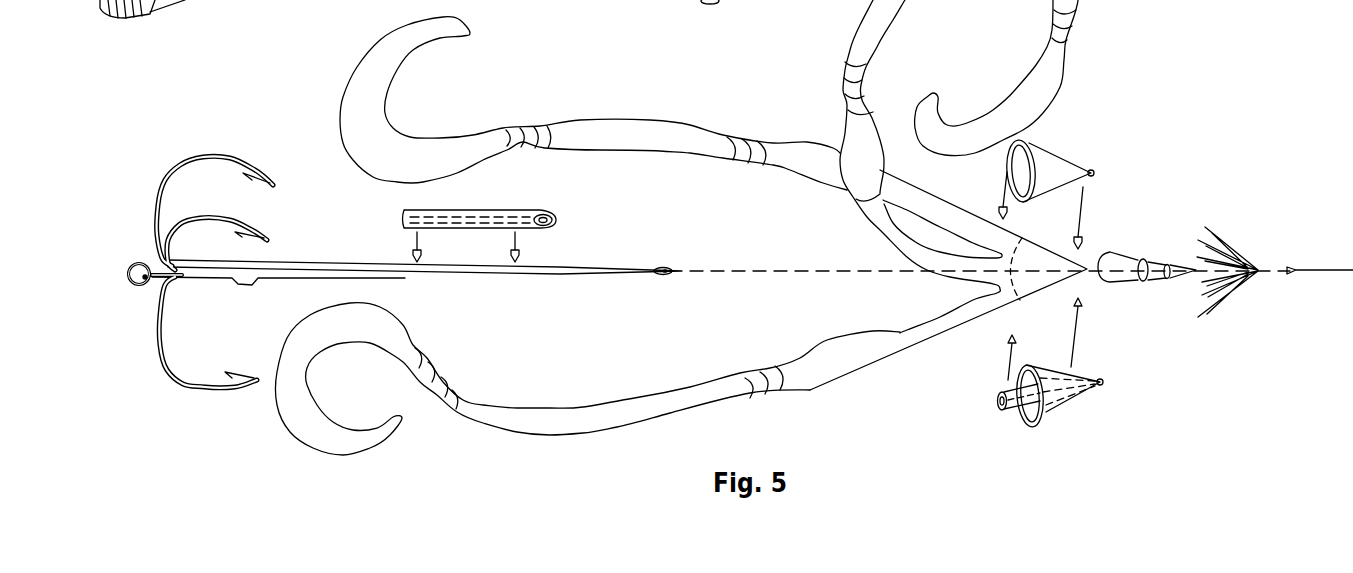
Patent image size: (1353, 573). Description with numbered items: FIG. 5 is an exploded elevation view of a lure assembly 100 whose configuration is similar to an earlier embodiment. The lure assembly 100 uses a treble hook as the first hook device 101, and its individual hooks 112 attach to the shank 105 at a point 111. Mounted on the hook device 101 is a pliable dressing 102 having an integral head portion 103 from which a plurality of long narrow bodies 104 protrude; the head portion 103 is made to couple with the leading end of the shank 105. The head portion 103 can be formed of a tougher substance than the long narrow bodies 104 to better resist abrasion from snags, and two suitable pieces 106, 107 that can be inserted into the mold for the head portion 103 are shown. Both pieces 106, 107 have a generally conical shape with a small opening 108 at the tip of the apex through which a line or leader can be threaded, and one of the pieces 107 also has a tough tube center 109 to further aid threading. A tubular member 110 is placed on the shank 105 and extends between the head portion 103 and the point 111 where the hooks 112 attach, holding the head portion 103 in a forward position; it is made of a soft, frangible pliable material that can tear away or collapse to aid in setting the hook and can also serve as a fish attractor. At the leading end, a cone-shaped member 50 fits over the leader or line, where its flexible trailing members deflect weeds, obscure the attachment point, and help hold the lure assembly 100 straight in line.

The cone-shaped member 50 is at (1268, 287).
The lure assembly 100 is at (513, 460).
The first hook device 101 is at (330, 264).
The pliable dressing 102 is at (931, 343).
The head portion 103 is at (1075, 277).
The long narrow bodies 104 is at (672, 418).
The shank 105 is at (560, 267).
The piece 106 is at (1043, 162).
The piece 107 is at (1057, 410).
The small opening 108 is at (1103, 384).
The tube center 109 is at (1013, 412).
The tubular member 110 is at (490, 212).
The point 111 is at (404, 278).
The hooks 112 is at (170, 318).